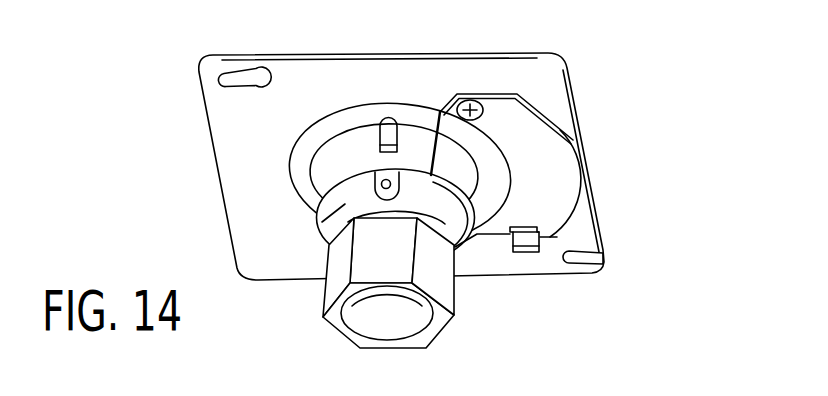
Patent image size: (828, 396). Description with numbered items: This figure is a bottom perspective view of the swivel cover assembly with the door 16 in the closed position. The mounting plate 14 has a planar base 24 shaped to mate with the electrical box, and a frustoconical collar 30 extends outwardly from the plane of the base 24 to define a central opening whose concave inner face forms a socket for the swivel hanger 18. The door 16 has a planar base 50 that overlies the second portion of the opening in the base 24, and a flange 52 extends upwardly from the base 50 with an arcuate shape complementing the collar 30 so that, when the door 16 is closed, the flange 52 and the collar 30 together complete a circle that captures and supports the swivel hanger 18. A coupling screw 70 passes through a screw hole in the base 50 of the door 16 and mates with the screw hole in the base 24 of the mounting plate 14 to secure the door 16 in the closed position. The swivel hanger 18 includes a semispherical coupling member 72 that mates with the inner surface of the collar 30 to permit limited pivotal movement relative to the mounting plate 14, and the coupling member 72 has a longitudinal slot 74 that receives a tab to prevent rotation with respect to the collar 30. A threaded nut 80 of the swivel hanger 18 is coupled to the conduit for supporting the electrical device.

The mounting plate 14 is at (391, 174).
The door 16 is at (505, 86).
The swivel hanger 18 is at (318, 298).
The planar base 24 is at (305, 80).
The collar 30 is at (326, 162).
The planar base 50 is at (540, 146).
The flange 52 is at (474, 176).
The coupling screw 70 is at (471, 104).
The coupling member 72 is at (322, 225).
The longitudinal slot 74 is at (322, 183).
The threaded nut 80 is at (457, 318).